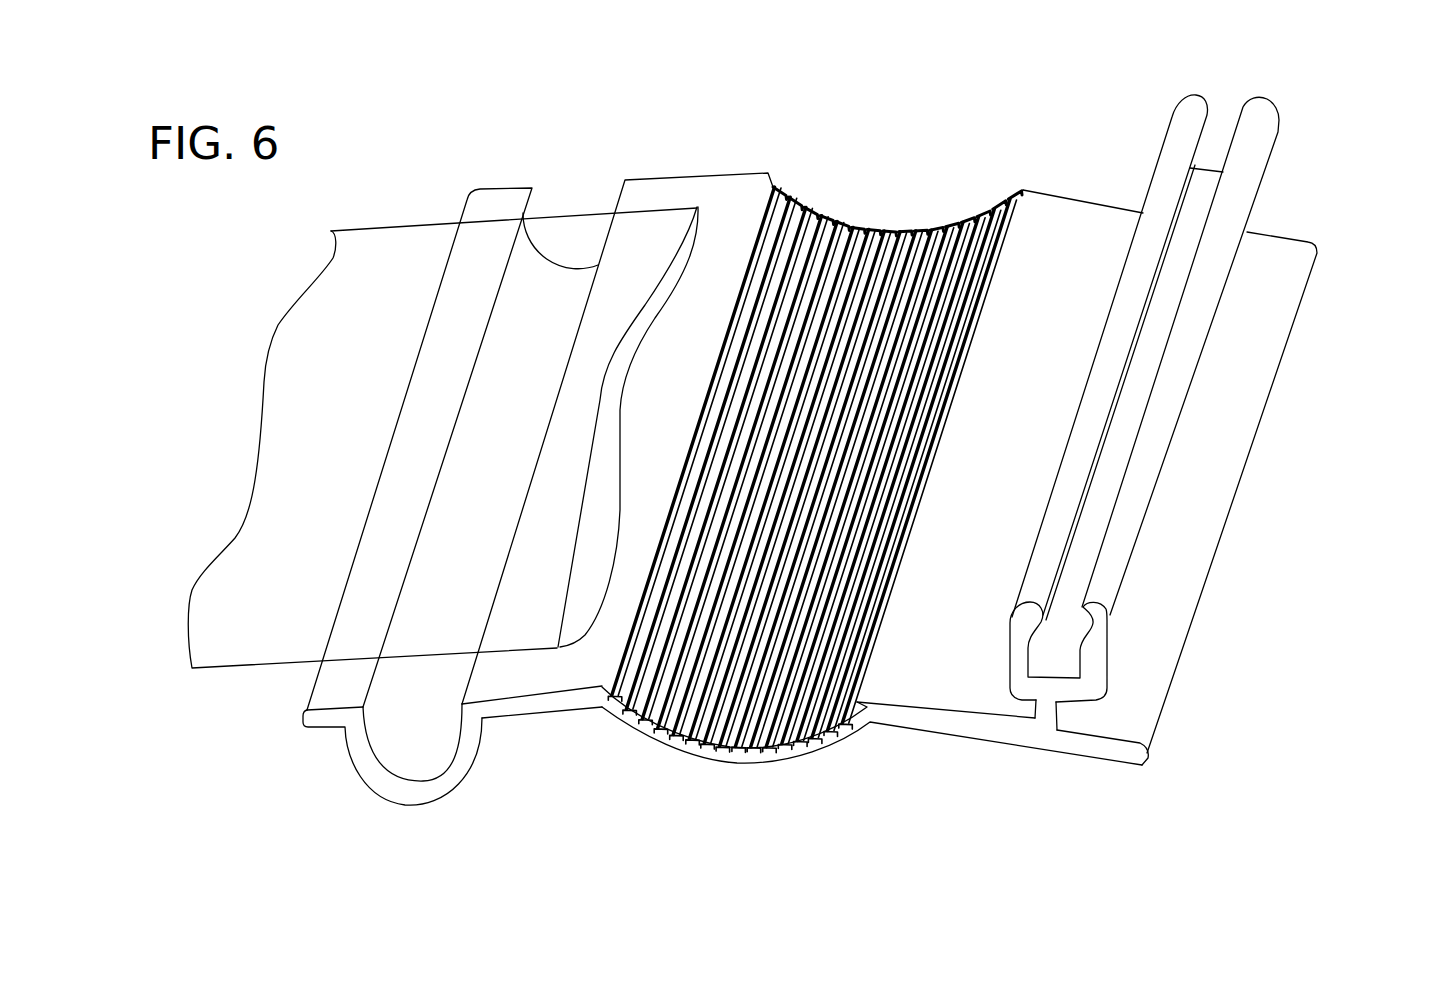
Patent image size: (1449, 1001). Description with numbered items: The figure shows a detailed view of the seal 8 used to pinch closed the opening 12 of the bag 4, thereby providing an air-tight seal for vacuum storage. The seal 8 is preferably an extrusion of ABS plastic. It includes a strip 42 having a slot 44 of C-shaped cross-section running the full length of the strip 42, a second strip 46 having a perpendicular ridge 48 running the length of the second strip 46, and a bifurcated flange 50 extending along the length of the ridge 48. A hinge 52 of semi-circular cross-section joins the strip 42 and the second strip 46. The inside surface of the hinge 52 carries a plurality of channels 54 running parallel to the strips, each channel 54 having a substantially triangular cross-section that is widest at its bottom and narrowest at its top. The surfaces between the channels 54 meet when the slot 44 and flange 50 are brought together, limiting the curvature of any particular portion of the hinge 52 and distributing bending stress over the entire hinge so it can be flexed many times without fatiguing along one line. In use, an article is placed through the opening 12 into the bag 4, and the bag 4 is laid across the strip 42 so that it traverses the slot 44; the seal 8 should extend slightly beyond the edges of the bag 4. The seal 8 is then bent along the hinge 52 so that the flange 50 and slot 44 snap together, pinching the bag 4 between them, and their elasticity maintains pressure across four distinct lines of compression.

The bag 4 is at (223, 608).
The seal 8 is at (1343, 62).
The opening 12 is at (642, 303).
The strip 42 is at (505, 670).
The slot 44 is at (413, 748).
The second strip 46 is at (947, 675).
The ridge 48 is at (1045, 708).
The bifurcated flange 50 is at (1093, 645).
The hinge 52 is at (847, 290).
The channels 54 is at (712, 750).